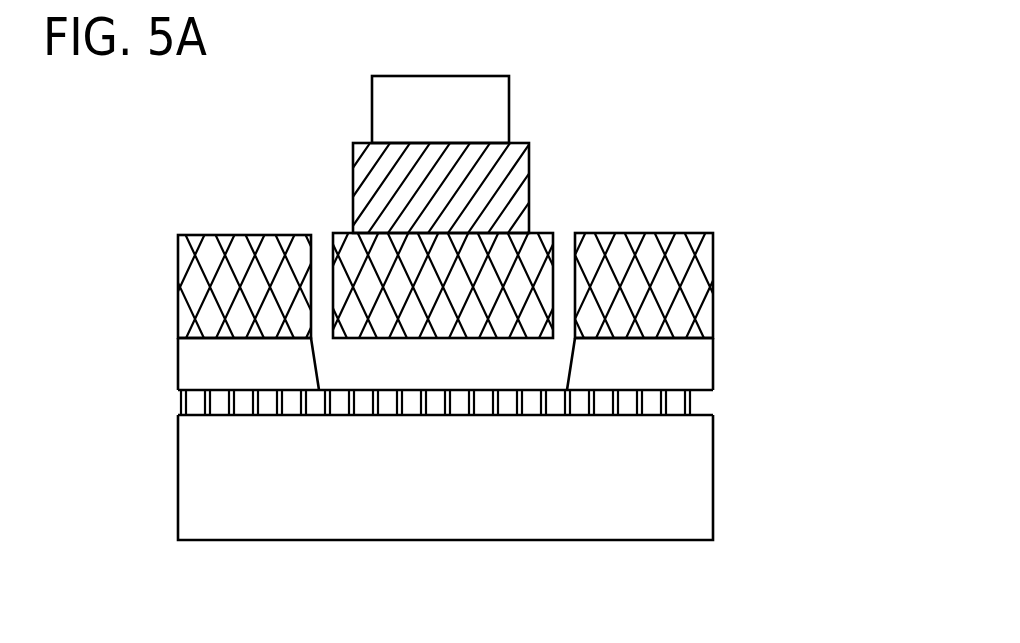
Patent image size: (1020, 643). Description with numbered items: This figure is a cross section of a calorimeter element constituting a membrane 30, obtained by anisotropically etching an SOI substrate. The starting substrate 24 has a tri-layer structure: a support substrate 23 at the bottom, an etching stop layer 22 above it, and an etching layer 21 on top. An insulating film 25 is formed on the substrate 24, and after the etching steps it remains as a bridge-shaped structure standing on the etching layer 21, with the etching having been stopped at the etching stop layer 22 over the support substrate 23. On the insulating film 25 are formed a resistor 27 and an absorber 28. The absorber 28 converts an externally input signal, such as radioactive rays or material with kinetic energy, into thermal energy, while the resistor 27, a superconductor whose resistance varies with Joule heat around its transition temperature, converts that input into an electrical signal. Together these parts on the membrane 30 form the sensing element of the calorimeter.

The etching layer 21 is at (663, 372).
The etching stop layer 22 is at (680, 393).
The support substrate 23 is at (608, 470).
The substrate 24 is at (160, 342).
The insulating film 25 is at (675, 308).
The resistor 27 is at (475, 221).
The absorber 28 is at (450, 132).
The membrane 30 is at (353, 233).